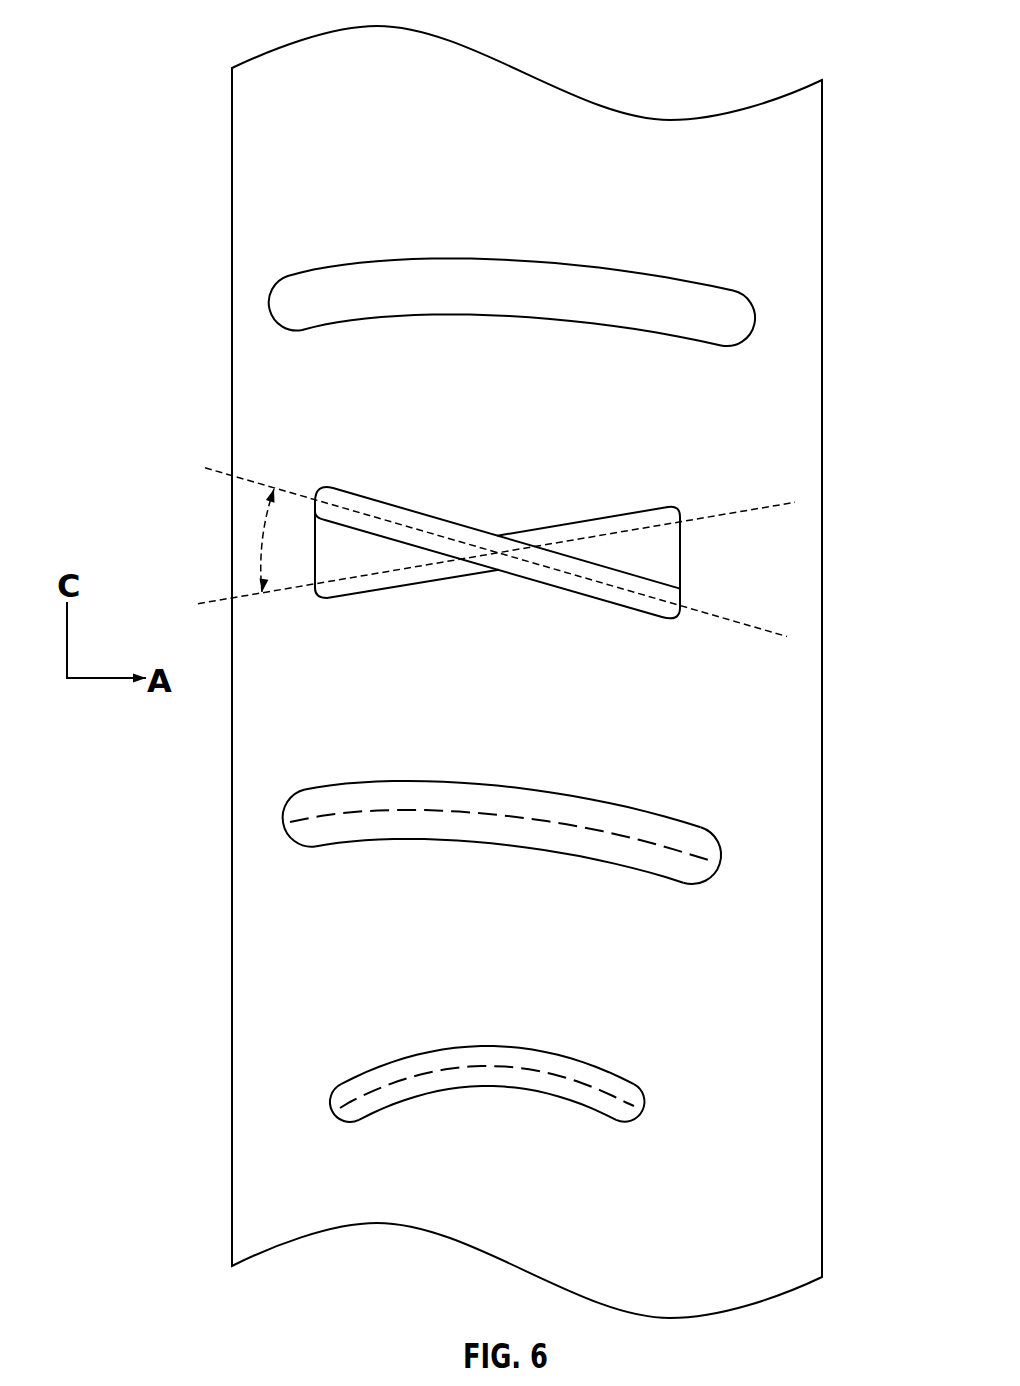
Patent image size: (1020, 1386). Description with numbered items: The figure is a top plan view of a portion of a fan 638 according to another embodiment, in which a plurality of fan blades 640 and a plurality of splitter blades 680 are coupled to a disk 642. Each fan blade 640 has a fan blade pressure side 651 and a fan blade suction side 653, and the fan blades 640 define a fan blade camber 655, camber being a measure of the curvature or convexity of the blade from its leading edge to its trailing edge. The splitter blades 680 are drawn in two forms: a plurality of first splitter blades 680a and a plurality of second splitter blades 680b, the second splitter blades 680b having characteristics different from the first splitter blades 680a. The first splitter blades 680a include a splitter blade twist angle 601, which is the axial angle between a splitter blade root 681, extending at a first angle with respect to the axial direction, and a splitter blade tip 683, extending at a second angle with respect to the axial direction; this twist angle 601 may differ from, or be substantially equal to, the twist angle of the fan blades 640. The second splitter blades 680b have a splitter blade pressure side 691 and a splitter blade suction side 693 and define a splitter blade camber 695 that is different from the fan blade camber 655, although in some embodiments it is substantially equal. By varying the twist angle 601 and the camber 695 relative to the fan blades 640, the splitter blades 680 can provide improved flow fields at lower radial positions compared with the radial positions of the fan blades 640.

The fan 638 is at (513, 659).
The disk 642 is at (807, 183).
The fan blades 640 is at (512, 578).
The splitter blades 680 is at (477, 823).
The first splitter blades 680a is at (497, 561).
The splitter blade root 681 is at (615, 513).
The splitter blade tip 683 is at (587, 598).
The splitter blade twist angle 601 is at (245, 537).
The fan blade suction side 653 is at (378, 780).
The fan blade pressure side 651 is at (368, 847).
The fan blade camber 655 is at (492, 819).
The second splitter blades 680b is at (491, 1086).
The splitter blade suction side 693 is at (608, 1064).
The splitter blade pressure side 691 is at (584, 1116).
The splitter blade camber 695 is at (500, 1069).